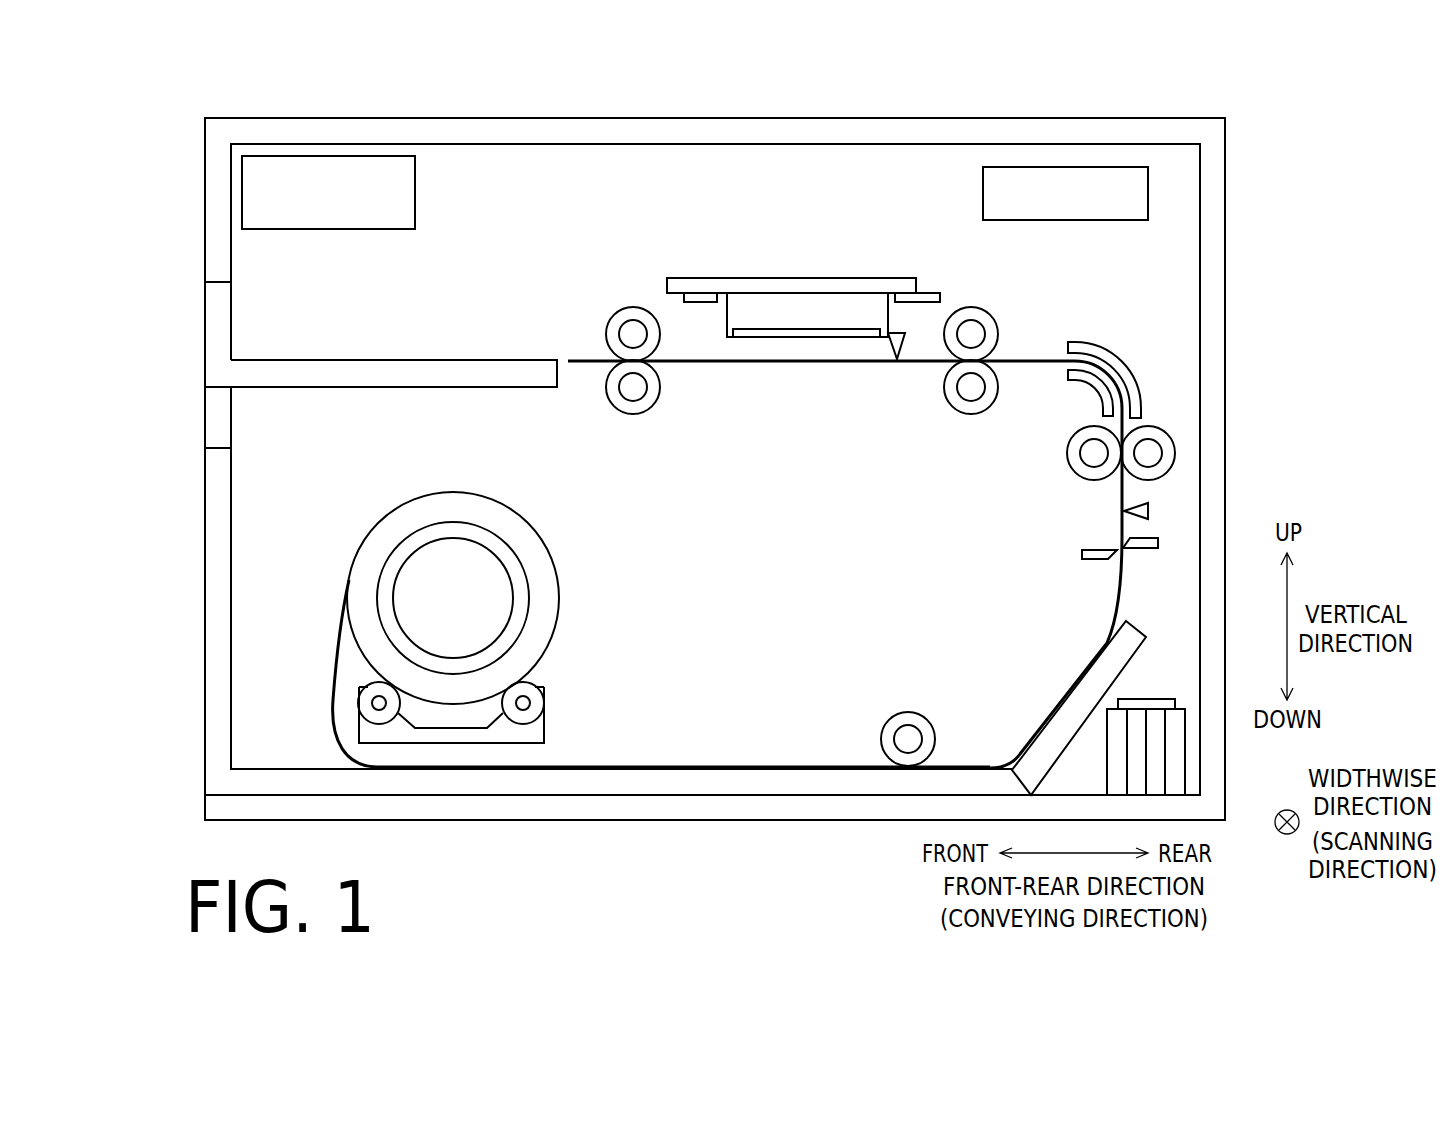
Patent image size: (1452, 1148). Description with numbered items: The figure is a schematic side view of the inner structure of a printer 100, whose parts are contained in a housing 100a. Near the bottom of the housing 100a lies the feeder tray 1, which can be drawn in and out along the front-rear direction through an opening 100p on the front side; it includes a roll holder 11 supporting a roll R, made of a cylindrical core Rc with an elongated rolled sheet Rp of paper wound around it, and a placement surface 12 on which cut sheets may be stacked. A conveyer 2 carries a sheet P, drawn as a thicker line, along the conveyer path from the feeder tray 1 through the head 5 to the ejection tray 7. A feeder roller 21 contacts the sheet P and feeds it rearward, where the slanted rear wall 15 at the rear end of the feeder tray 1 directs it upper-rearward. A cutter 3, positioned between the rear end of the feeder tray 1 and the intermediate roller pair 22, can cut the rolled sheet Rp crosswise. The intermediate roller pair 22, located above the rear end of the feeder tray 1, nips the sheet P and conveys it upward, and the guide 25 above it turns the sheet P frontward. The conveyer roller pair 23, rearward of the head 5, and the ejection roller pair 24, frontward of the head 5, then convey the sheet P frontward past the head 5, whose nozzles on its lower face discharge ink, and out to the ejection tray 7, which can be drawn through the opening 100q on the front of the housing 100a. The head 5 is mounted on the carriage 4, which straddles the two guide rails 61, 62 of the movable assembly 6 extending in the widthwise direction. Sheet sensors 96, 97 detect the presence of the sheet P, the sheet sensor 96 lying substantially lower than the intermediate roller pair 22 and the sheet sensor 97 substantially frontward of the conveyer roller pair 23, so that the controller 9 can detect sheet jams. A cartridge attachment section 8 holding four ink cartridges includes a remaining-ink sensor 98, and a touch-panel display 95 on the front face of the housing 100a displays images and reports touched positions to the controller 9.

The feeder tray 1 is at (170, 560).
The printer 100 is at (1277, 130).
The housing 100a is at (1213, 237).
The opening 100q is at (217, 284).
The opening 100p is at (217, 450).
The ejection tray 7 is at (170, 338).
The touch-panel display 95 is at (242, 191).
The controller 9 is at (983, 182).
The movable assembly 6 is at (781, 310).
The carriage 4 is at (790, 278).
The guide rail 62 is at (696, 280).
The guide rail 61 is at (906, 290).
The head 5 is at (810, 333).
The sheet sensor 97 is at (896, 333).
The ejection roller pair 24 is at (612, 300).
The conveyer roller pair 23 is at (995, 300).
The conveyer 2 is at (583, 337).
The guide 25 is at (1125, 336).
The intermediate roller pair 22 is at (1050, 455).
The sheet sensor 96 is at (1148, 511).
The cutter 3 is at (1072, 535).
The sheet P is at (1117, 591).
The rear wall 15 is at (1072, 707).
The cartridge attachment section 8 is at (1193, 717).
The remaining-ink sensor 98 is at (1147, 699).
The feeder roller 21 is at (907, 712).
The placement surface 12 is at (755, 778).
The rolled sheet Rp is at (683, 765).
The roll R is at (398, 503).
The core Rc is at (527, 577).
The roll holder 11 is at (553, 703).